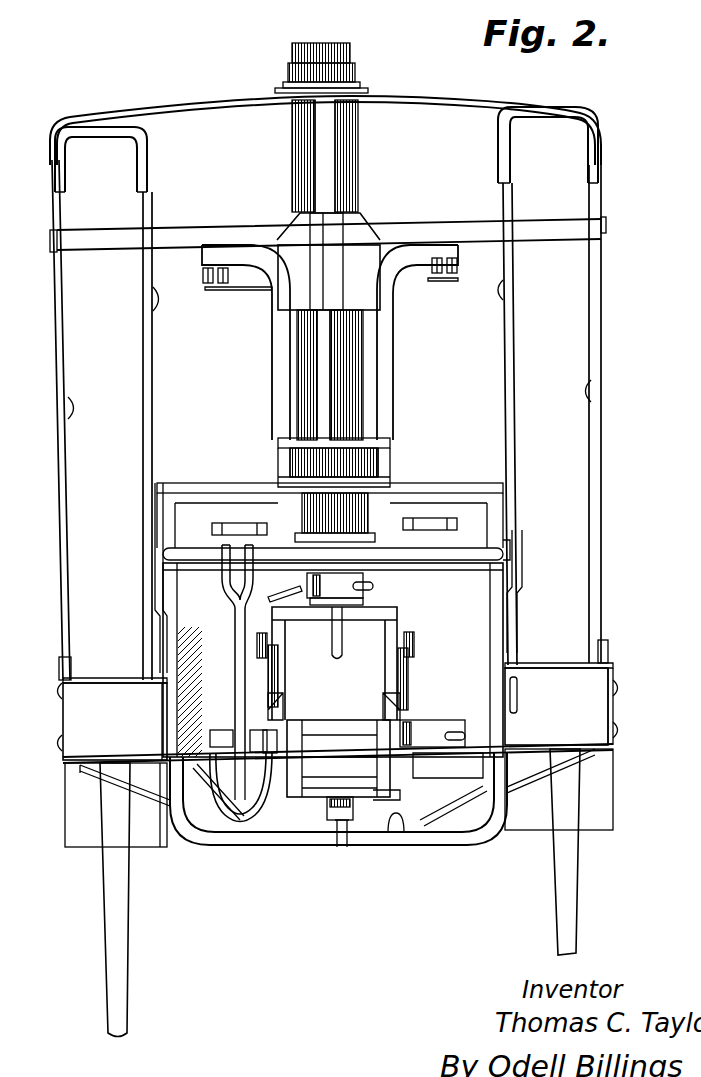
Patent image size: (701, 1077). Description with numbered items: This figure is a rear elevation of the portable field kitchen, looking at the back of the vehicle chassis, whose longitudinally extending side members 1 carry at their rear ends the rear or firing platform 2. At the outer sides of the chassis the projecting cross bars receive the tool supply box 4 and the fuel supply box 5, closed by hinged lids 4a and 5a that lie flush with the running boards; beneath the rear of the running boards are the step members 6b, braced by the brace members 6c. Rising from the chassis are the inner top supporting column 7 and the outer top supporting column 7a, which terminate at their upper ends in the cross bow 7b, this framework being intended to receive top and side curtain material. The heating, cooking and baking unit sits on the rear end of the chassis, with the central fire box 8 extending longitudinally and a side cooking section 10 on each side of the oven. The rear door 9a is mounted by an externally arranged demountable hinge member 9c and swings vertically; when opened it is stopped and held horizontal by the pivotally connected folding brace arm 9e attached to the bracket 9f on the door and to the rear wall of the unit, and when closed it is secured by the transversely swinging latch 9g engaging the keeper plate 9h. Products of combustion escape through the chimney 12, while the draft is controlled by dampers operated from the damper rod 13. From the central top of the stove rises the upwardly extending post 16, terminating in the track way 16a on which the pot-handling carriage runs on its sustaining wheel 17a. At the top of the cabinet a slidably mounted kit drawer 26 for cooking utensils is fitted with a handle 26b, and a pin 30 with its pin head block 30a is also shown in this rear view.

The side member 1 is at (212, 778).
The firing platform 2 is at (396, 832).
The tool supply box 4 is at (82, 719).
The hinged lid 4a is at (113, 680).
The fuel supply box 5 is at (606, 776).
The hinged lid 5a is at (560, 665).
The step member 6b is at (118, 757).
The brace member 6c is at (150, 805).
The inner top supporting column 7 is at (150, 430).
The outer top supporting column 7a is at (60, 527).
The cross bow 7b is at (444, 97).
The central fire box 8 is at (416, 745).
The rear door 9a is at (378, 632).
The demountable hinge member 9c is at (276, 712).
The folding brace arm 9e is at (280, 676).
The bracket 9f is at (262, 646).
The transversely swinging latch 9g is at (342, 650).
The keeper plate 9h is at (362, 597).
The side cooking section 10 is at (338, 620).
The chimney 12 is at (320, 388).
The damper rod 13 is at (274, 585).
The upwardly extending post 16 is at (276, 360).
The track way 16a is at (210, 292).
The sustaining wheel 17a is at (204, 275).
The kit drawer 26 is at (478, 524).
The handle 26b is at (236, 520).
The pin 30 is at (340, 836).
The pin head block 30a is at (326, 810).